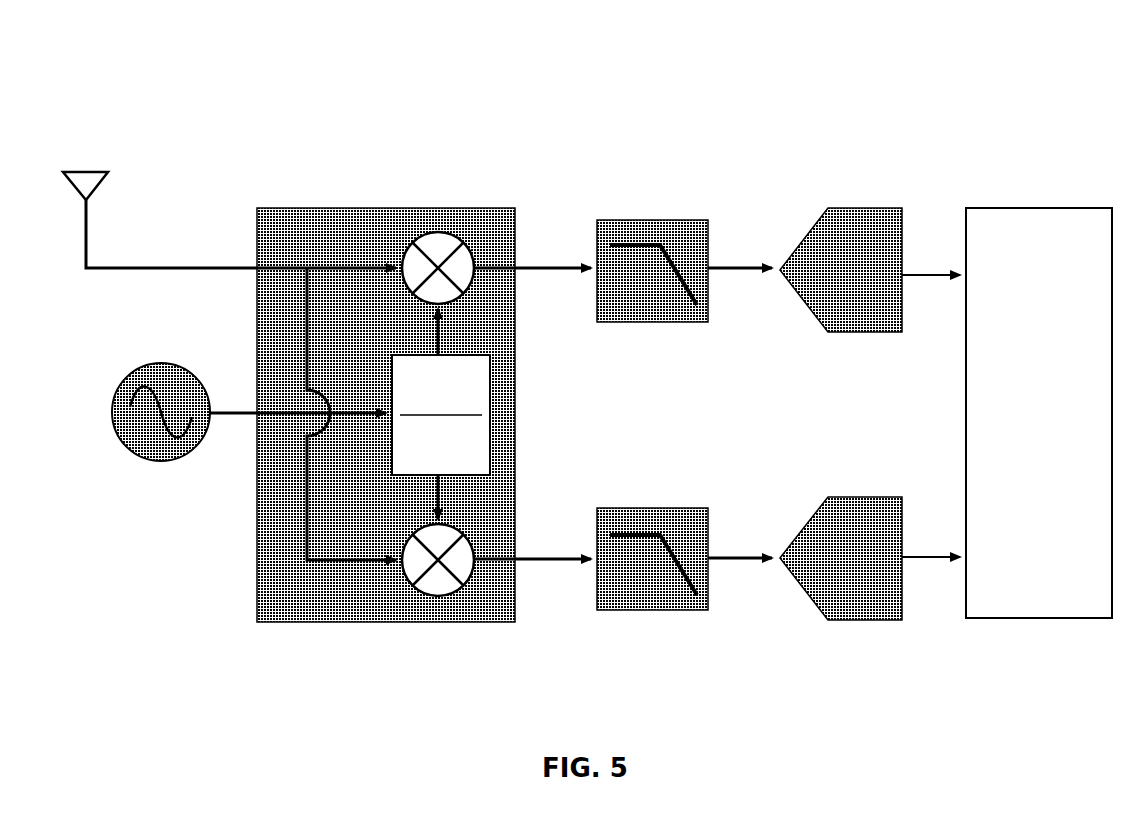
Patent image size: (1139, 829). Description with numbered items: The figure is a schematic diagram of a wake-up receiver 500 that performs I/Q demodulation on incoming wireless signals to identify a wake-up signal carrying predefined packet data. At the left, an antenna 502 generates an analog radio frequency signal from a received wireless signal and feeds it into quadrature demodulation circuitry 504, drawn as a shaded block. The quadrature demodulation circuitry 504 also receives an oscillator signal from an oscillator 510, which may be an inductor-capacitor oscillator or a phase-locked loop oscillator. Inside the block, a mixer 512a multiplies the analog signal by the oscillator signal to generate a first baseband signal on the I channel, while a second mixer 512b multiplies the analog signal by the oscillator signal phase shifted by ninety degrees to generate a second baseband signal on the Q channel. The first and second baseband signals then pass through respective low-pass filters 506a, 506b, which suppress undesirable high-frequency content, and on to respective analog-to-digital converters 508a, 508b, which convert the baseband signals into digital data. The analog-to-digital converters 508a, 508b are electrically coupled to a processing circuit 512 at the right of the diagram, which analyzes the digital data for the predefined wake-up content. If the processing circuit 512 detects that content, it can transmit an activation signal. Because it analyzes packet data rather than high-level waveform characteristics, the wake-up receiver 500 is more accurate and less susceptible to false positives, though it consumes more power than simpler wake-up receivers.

The wake-up receiver 500 is at (826, 84).
The antenna 502 is at (87, 171).
The quadrature demodulation circuitry 504 is at (388, 209).
The low-pass filter 506a is at (658, 222).
The low-pass filter 506b is at (667, 510).
The analog-to-digital converter 508a is at (841, 208).
The analog-to-digital converter 508b is at (858, 620).
The oscillator 510 is at (165, 460).
The processing circuit 512 is at (1039, 413).
The mixer 512a is at (465, 240).
The mixer 512b is at (426, 596).